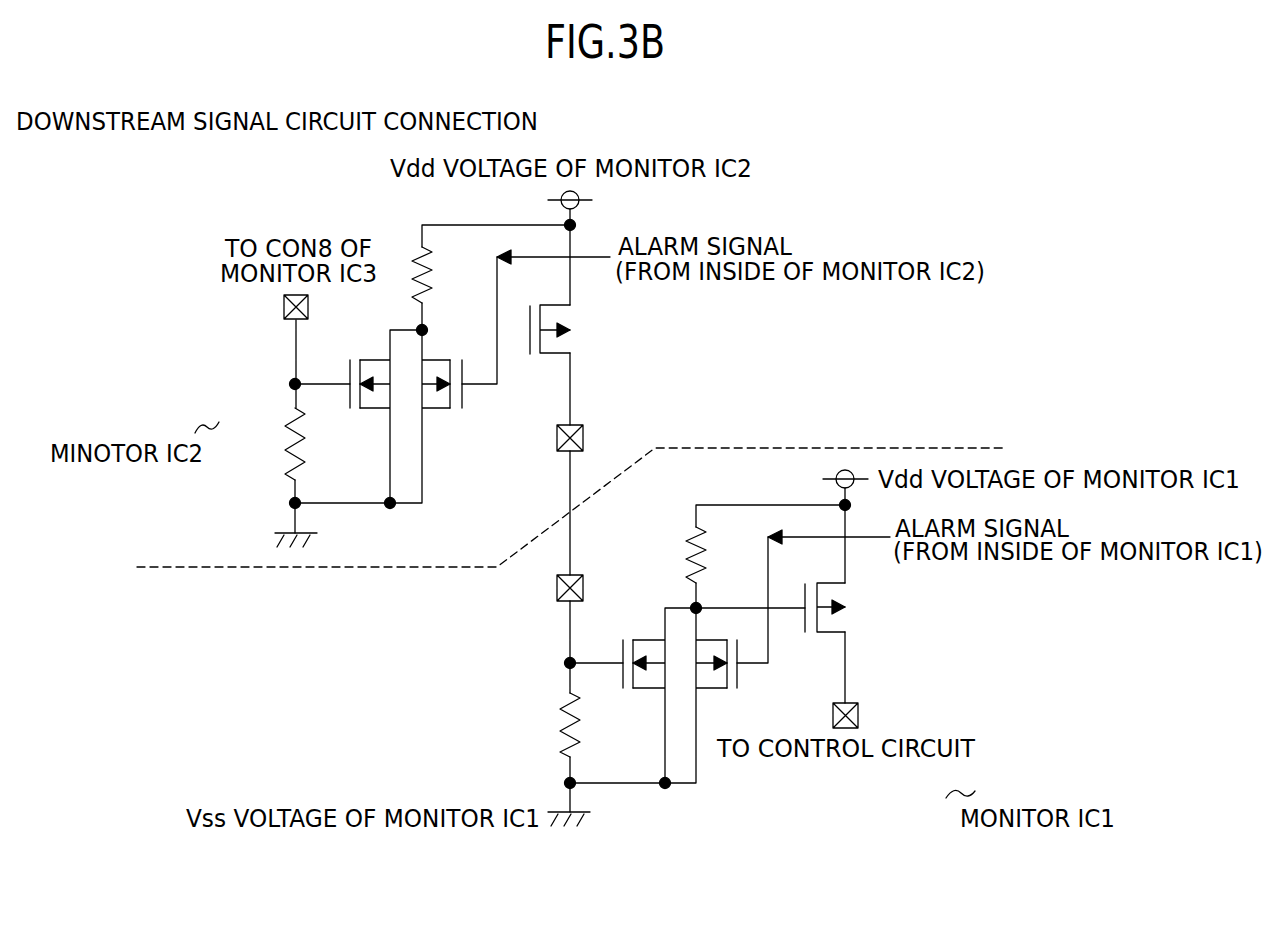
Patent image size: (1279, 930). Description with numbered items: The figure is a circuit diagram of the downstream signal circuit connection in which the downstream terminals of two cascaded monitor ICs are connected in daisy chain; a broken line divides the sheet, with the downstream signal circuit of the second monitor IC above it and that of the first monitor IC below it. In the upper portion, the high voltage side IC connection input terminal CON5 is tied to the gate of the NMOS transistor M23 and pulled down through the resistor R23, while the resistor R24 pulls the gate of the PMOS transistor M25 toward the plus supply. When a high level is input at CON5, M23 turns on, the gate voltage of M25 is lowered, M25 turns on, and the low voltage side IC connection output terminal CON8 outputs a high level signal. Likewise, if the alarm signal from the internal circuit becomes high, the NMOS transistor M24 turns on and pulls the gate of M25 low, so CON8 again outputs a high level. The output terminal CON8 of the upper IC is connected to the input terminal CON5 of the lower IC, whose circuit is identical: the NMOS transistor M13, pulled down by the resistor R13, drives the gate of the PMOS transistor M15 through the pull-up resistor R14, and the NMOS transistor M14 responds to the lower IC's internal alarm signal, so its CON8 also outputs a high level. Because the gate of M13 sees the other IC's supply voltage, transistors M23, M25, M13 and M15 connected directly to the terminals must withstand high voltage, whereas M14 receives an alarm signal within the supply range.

The resistor R24 is at (445, 275).
The PMOS transistor M25 is at (542, 315).
The NMOS transistor M23 is at (354, 370).
The NMOS transistor M24 is at (452, 401).
The resistor R23 is at (319, 444).
The high voltage side IC connection input terminal CON5 is at (285, 322).
The low voltage side IC connection output terminal CON8 is at (584, 424).
The resistor R14 is at (719, 555).
The PMOS transistor M15 is at (817, 594).
The NMOS transistor M13 is at (629, 649).
The NMOS transistor M14 is at (726, 681).
The resistor R13 is at (594, 725).